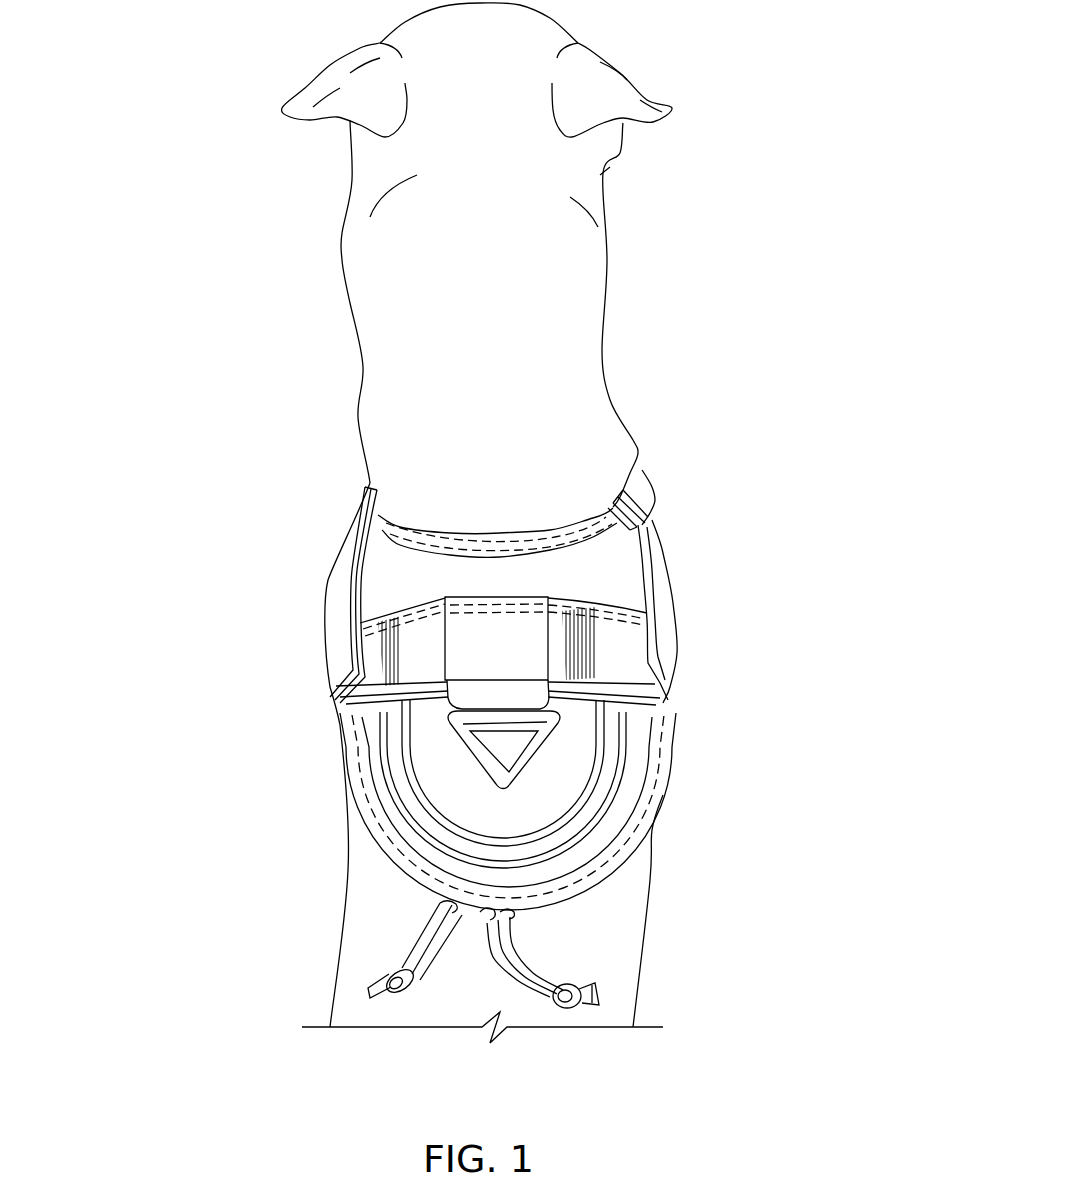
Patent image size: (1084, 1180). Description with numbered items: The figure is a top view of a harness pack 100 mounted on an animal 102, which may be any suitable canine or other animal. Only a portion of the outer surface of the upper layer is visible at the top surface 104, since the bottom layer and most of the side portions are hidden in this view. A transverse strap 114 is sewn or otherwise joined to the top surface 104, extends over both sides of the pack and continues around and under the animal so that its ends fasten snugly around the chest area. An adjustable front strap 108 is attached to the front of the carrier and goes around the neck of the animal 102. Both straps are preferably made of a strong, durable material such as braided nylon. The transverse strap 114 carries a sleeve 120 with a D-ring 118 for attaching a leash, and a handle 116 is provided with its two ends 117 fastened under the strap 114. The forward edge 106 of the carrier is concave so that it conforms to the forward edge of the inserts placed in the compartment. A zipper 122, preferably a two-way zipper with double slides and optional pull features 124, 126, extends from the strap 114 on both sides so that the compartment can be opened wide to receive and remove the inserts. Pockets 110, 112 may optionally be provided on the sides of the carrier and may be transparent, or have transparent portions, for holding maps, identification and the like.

The harness pack 100 is at (847, 708).
The animal 102 is at (470, 301).
The top surface of the upper layer 104 is at (615, 570).
The forward edge of the carrier 106 is at (500, 513).
The adjustable front strap 108 is at (654, 476).
The pocket 110 is at (685, 618).
The pocket 112 is at (320, 612).
The transverse strap 114 is at (600, 652).
The handle 116 is at (630, 787).
The ends of the handle 117 is at (376, 688).
The D-ring 118 is at (486, 757).
The sleeve 120 is at (483, 643).
The zipper 122 is at (649, 852).
The pull feature 124 is at (564, 968).
The pull feature 126 is at (401, 948).